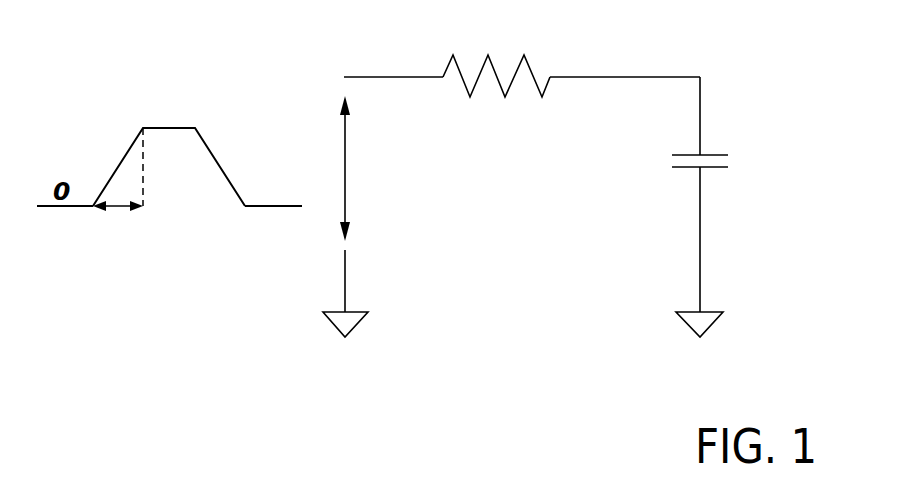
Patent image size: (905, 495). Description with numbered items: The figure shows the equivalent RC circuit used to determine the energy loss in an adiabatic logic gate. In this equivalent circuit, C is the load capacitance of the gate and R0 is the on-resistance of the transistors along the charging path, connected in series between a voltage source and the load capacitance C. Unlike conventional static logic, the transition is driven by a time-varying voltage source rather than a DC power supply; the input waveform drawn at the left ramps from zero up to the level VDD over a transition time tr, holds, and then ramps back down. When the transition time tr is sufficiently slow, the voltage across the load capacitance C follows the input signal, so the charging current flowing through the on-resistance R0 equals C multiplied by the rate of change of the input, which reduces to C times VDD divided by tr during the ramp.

The on-resistance R0 is at (496, 48).
The load capacitance C is at (715, 162).
The supply voltage level VDD is at (169, 136).
The transition time tr is at (118, 191).